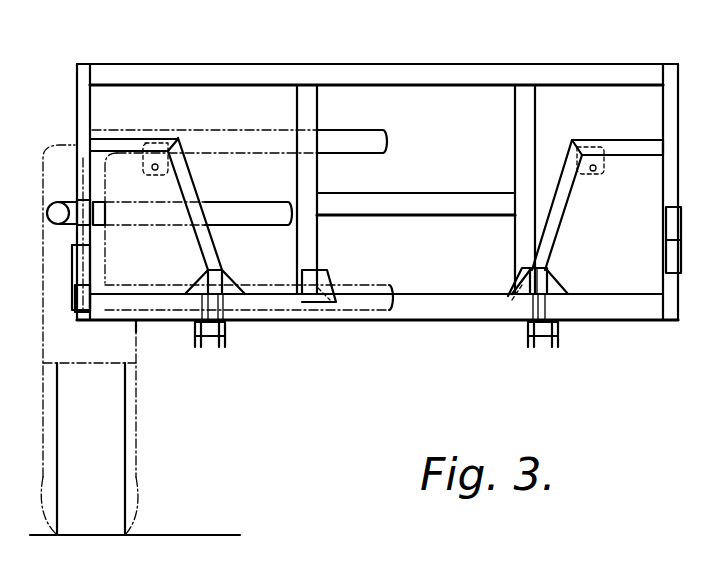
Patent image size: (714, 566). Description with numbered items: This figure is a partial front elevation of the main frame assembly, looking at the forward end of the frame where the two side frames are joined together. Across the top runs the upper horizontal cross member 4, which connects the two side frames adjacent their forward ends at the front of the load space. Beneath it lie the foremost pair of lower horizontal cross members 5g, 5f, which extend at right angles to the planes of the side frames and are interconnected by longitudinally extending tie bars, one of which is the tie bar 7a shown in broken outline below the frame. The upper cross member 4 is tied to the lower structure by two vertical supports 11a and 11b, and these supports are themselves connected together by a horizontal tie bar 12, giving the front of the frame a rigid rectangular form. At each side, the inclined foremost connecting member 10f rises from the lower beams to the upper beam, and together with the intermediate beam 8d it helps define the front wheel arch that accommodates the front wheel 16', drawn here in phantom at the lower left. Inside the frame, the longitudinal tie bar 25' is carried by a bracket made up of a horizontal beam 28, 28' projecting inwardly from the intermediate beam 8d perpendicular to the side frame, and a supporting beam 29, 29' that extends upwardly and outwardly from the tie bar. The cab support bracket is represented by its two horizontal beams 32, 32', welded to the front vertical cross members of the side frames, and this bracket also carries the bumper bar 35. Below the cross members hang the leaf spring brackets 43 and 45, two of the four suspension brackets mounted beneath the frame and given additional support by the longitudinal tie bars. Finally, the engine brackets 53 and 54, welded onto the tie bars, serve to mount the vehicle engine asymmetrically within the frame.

The upper horizontal cross member 4 is at (484, 64).
The lower horizontal cross member 5g is at (297, 338).
The lower horizontal cross member 5f is at (405, 308).
The longitudinally extending tie bar 7a is at (187, 305).
The intermediate beam 8d is at (667, 152).
The foremost connecting member 10f is at (663, 192).
The vertical support 11a is at (318, 114).
The vertical support 11b is at (522, 128).
The horizontal tie bar 12 is at (432, 203).
The front wheel 16' is at (135, 340).
The longitudinally extending tie bar 25' is at (244, 318).
The horizontal beam 28 is at (617, 132).
The horizontal beam 28' is at (138, 96).
The supporting beam 29 is at (569, 230).
The supporting beam 29' is at (198, 204).
The horizontal beam 32 is at (637, 288).
The horizontal beam 32' is at (124, 272).
The bumper bar 35 is at (226, 130).
The leaf spring bracket 43 is at (538, 348).
The leaf spring bracket 45 is at (213, 350).
The engine bracket 53 is at (517, 280).
The engine bracket 54 is at (330, 273).